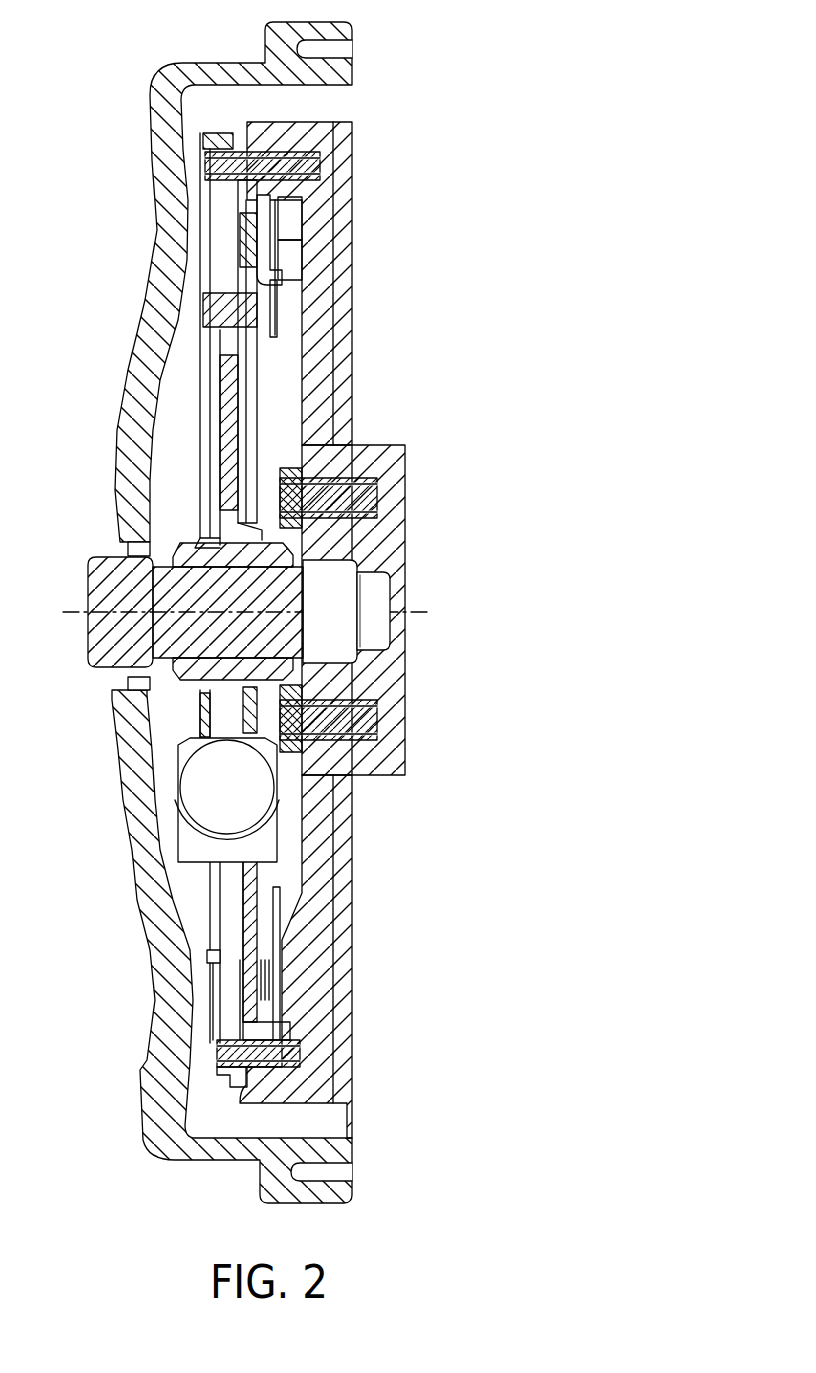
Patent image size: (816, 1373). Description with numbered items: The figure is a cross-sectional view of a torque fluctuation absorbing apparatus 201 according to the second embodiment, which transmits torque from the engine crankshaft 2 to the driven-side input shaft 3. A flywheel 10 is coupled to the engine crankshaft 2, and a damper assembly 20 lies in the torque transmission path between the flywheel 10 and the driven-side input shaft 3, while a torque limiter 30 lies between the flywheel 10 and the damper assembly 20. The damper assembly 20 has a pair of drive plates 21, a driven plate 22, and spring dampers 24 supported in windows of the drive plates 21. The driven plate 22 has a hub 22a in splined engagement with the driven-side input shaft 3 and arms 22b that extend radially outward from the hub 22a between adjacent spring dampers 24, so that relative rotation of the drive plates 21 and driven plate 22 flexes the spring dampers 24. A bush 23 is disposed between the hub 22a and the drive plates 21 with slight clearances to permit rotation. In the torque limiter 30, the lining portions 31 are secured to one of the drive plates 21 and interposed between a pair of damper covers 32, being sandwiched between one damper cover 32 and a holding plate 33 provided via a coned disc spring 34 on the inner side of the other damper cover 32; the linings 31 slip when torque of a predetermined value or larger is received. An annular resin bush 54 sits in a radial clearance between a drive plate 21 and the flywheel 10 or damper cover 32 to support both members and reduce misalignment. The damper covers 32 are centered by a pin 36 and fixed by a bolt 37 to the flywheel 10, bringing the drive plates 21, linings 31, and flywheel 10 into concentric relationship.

The torque fluctuation absorbing apparatus 201 is at (385, 120).
The engine crankshaft 2 is at (397, 552).
The driven-side input shaft 3 is at (170, 637).
The flywheel 10 is at (340, 167).
The damper assembly 20 is at (133, 340).
The drive plates 21 is at (236, 400).
The driven plate 22 is at (131, 340).
The hub 22a is at (198, 548).
The arms 22b is at (236, 460).
The bush 23 is at (283, 688).
The spring dampers 24 is at (222, 787).
The torque limiter 30 is at (157, 250).
The lining portions 31 is at (262, 217).
The damper covers 32 is at (254, 238).
The holding plate 33 is at (252, 209).
The coned disc spring 34 is at (256, 243).
The pin 36 is at (267, 1062).
The bolt 37 is at (210, 145).
The bush 54 is at (213, 958).